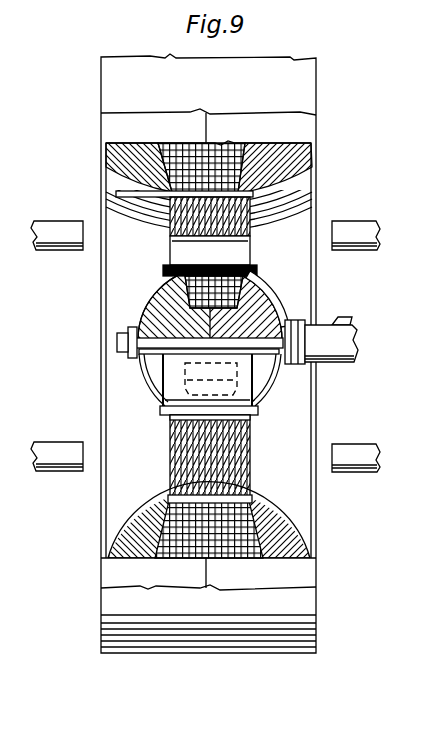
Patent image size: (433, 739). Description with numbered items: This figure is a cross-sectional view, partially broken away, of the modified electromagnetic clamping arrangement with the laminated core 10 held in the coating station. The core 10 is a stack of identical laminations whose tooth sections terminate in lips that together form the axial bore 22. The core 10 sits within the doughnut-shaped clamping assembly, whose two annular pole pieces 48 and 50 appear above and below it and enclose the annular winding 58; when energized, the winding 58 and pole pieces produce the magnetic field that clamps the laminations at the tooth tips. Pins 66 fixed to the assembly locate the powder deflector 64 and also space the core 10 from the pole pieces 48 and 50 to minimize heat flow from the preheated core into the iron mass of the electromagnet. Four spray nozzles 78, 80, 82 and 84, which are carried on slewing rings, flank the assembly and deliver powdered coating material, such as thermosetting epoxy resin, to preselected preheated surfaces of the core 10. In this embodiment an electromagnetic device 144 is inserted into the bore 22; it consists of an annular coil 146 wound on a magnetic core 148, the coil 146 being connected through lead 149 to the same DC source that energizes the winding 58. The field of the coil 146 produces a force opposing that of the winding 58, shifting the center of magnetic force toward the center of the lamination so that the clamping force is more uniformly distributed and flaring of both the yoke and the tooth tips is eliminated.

The core 10 is at (251, 449).
The axial bore 22 is at (172, 268).
The annular pole piece 48 is at (135, 159).
The annular pole piece 50 is at (283, 157).
The annular winding 58 is at (232, 160).
The powder deflector 64 is at (276, 512).
The pins 66 is at (135, 203).
The spray nozzle 78 is at (63, 237).
The spray nozzle 80 is at (53, 440).
The spray nozzle 82 is at (360, 246).
The spray nozzle 84 is at (359, 446).
The electromagnetic device 144 is at (135, 315).
The annular coil 146 is at (262, 292).
The magnetic core 148 is at (260, 311).
The lead 149 is at (345, 320).